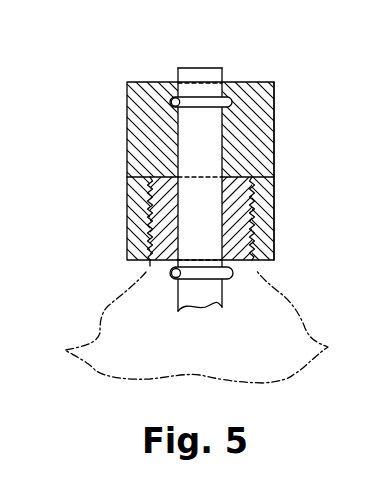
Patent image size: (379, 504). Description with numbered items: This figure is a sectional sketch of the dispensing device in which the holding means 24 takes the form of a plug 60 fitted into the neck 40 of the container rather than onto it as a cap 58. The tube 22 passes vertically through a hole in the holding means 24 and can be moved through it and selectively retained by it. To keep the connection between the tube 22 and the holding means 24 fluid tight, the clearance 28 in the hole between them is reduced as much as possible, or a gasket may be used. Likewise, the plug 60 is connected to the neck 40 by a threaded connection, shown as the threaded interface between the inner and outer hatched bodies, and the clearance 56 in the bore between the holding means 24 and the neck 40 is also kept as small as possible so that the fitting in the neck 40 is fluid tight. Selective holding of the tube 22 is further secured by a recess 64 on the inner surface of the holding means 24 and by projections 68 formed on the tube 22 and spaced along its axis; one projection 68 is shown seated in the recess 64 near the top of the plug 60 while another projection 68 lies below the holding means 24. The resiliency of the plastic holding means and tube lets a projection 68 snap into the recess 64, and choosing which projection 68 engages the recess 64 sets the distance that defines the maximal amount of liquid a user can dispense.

The tube 22 is at (183, 68).
The holding means 24 is at (127, 125).
The clearance 28 is at (224, 72).
The neck 40 is at (147, 246).
The clearance 56 is at (253, 264).
The cap 58 is at (277, 122).
The plug 60 is at (150, 265).
The recess 64 is at (176, 90).
The projections 68 is at (229, 98).